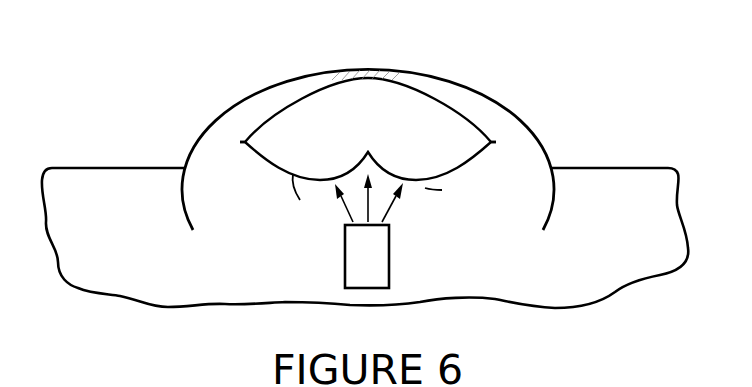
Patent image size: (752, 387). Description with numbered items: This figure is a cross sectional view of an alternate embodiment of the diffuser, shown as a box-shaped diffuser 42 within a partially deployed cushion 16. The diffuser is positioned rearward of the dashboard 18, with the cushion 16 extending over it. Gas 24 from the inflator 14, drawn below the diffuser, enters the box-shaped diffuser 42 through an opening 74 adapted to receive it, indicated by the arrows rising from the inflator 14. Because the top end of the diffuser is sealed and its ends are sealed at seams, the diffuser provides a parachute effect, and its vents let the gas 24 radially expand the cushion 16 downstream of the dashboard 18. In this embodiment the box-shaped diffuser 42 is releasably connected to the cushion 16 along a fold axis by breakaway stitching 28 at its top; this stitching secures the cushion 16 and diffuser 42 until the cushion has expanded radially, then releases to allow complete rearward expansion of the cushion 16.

The inflator 14 is at (345, 260).
The cushion 16 is at (490, 97).
The dashboard 18 is at (625, 168).
The gas 24 is at (388, 207).
The breakaway stitching 28 is at (380, 68).
The box-shaped diffuser 42 is at (305, 132).
The opening 74 is at (432, 190).